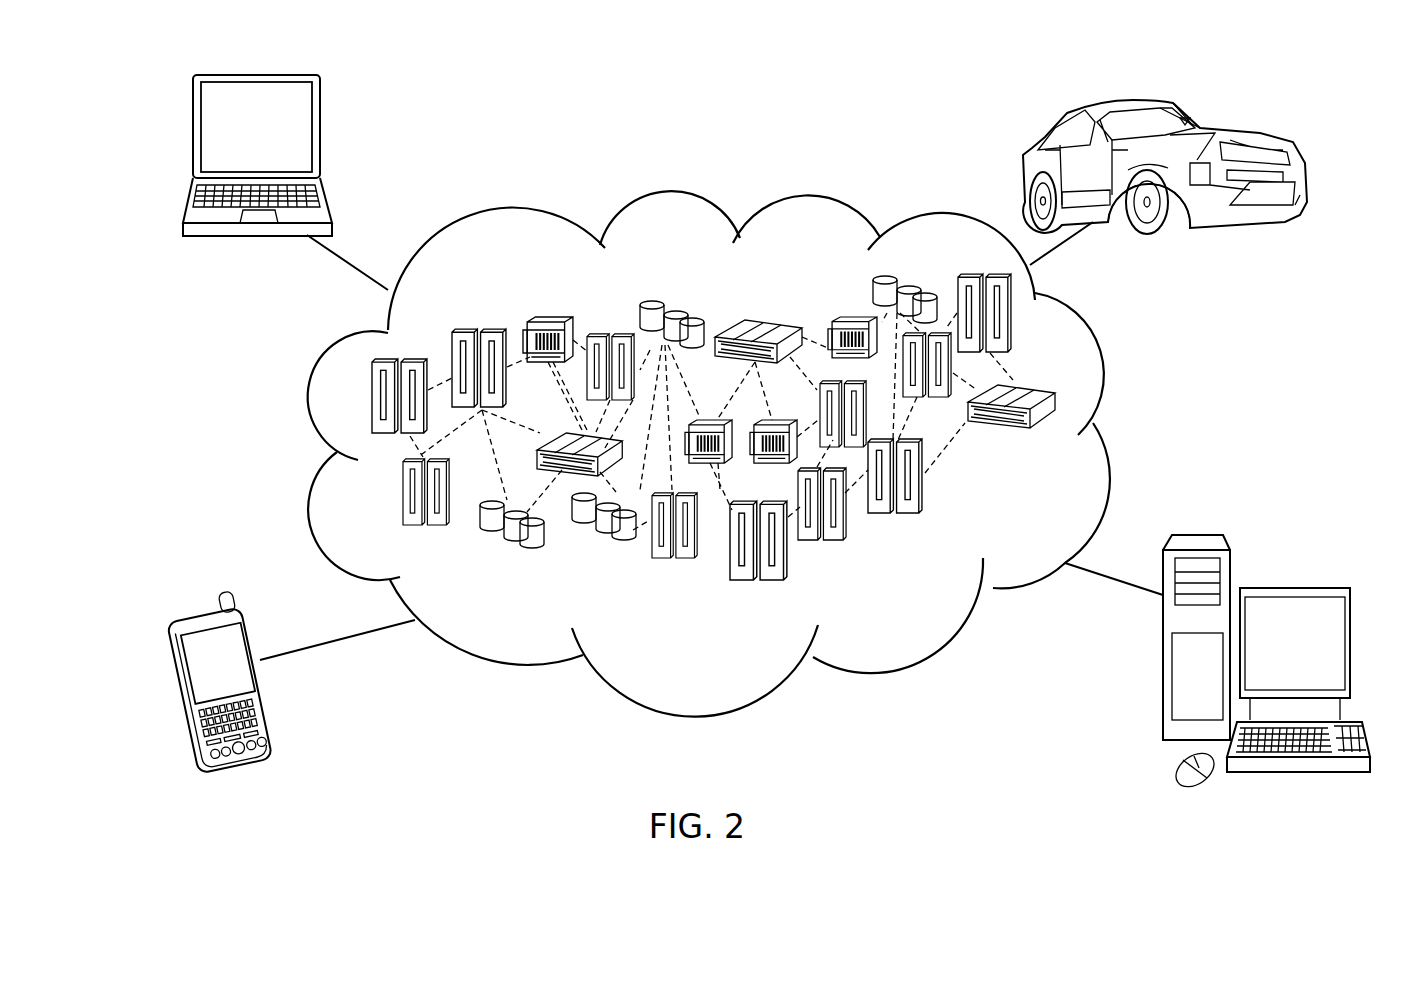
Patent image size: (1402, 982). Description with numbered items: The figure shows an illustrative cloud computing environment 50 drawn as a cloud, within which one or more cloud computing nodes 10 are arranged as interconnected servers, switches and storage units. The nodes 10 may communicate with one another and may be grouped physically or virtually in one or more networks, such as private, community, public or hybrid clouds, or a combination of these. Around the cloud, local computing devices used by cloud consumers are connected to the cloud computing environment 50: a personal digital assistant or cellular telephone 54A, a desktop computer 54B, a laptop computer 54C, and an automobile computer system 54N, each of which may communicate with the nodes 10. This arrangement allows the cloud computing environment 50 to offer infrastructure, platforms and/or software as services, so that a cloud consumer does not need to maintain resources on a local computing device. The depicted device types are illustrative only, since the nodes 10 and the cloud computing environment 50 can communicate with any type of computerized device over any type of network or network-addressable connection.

The cloud computing nodes 10 is at (1082, 450).
The cloud computing environment 50 is at (1103, 363).
The personal digital assistant or cellular telephone 54A is at (176, 690).
The desktop computer 54B is at (1287, 588).
The laptop computer 54C is at (193, 133).
The automobile computer system 54N is at (1215, 118).